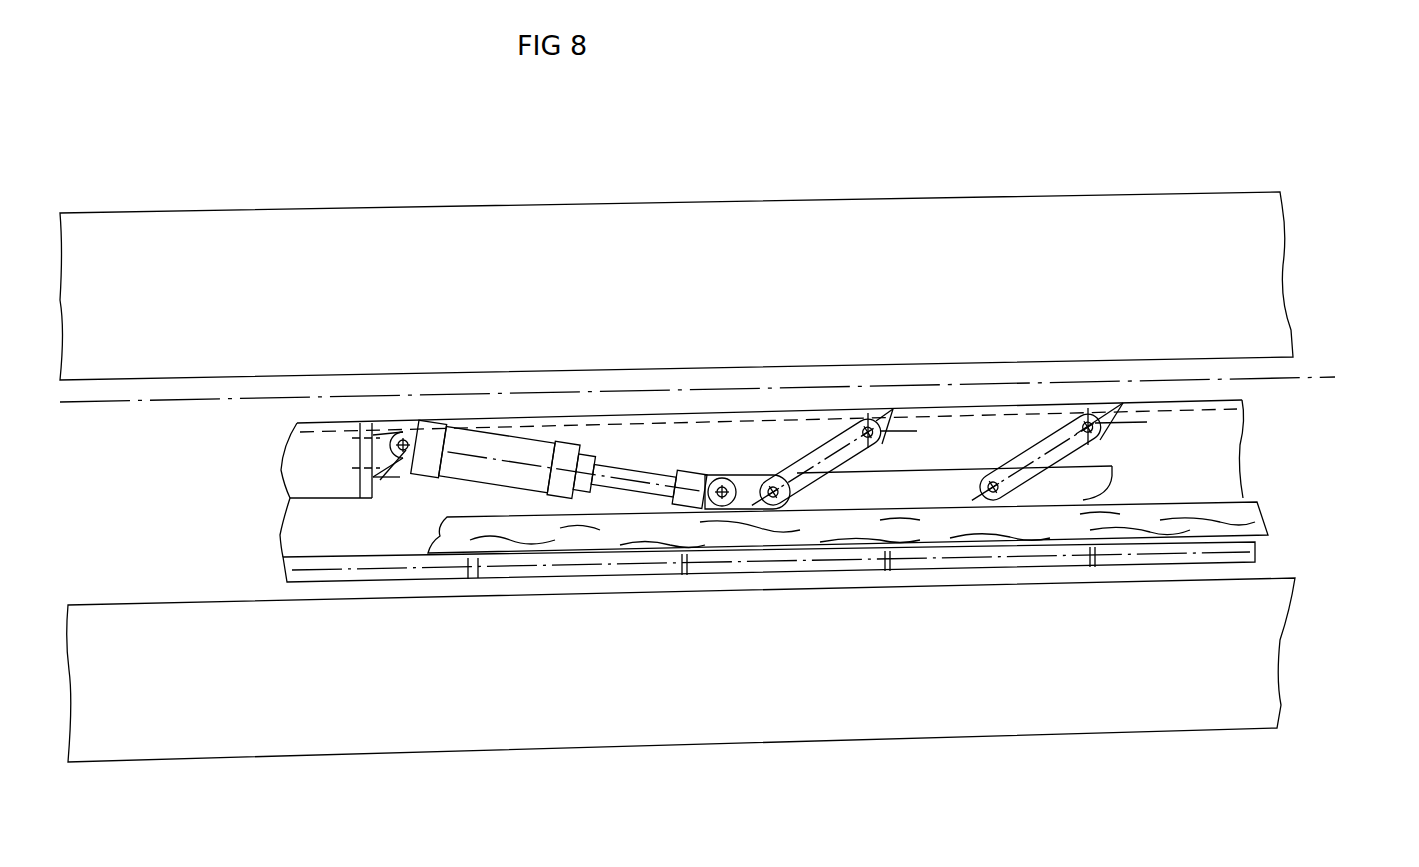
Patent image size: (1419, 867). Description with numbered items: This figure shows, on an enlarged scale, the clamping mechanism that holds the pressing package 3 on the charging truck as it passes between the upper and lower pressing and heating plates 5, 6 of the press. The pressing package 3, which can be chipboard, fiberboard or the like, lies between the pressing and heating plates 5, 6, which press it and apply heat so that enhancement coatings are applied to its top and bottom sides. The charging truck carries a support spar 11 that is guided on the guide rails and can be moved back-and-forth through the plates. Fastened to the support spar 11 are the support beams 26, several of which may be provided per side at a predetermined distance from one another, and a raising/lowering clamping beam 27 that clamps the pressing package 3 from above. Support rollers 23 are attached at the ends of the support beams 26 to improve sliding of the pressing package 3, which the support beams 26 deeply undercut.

The pressing and heating plate 5 is at (1252, 228).
The pressing and heating plate 6 is at (1245, 663).
The raising/lowering clamping beam 27 is at (1083, 480).
The support spar 11 is at (1218, 492).
The pressing package 3 is at (1247, 522).
The support beam 26 is at (1097, 562).
The support roller 23 is at (851, 588).